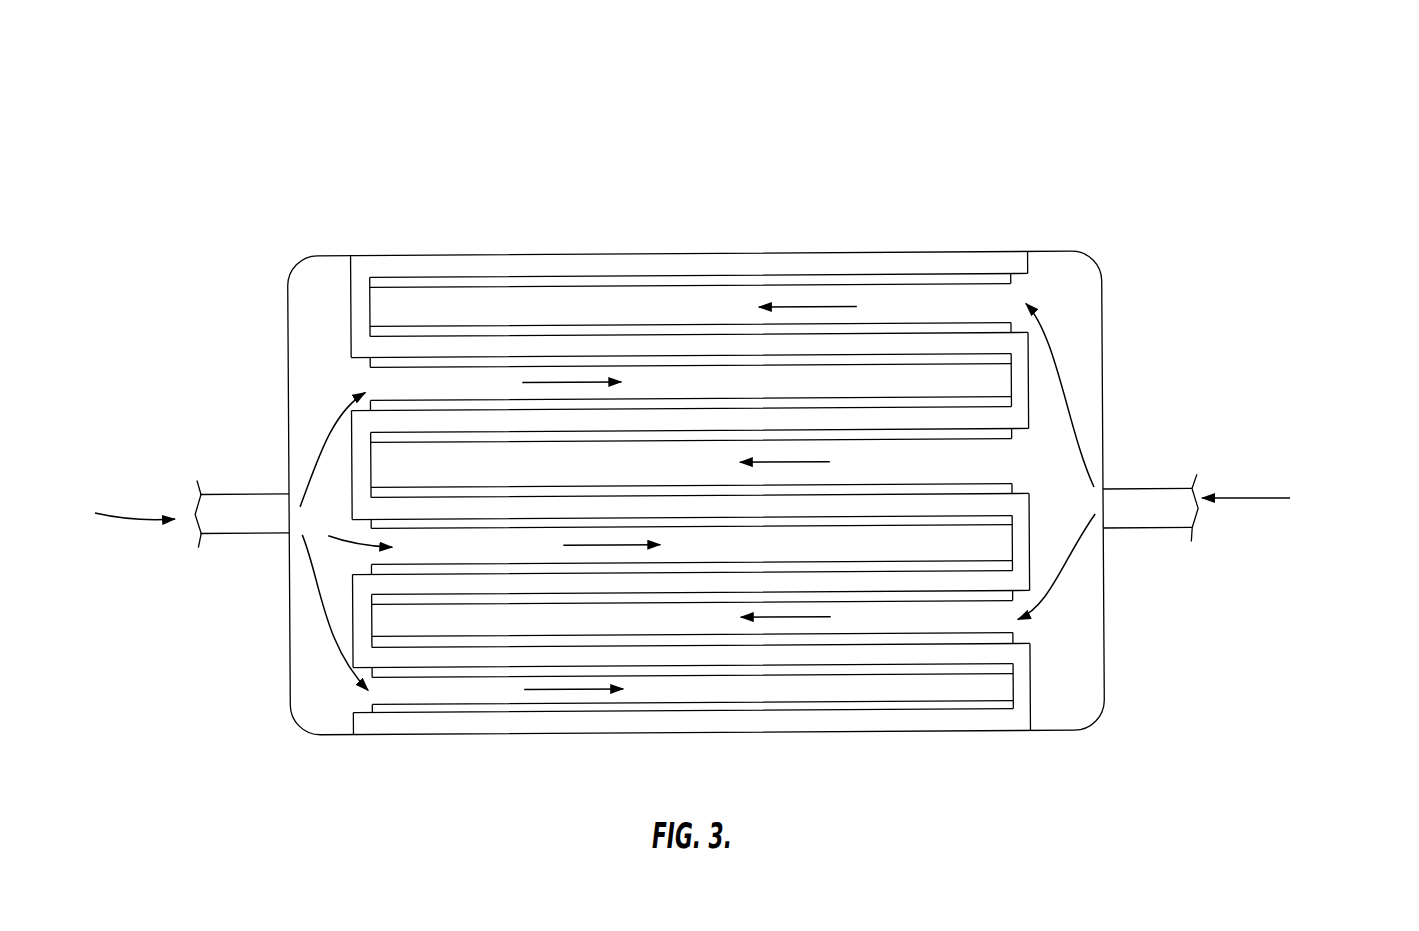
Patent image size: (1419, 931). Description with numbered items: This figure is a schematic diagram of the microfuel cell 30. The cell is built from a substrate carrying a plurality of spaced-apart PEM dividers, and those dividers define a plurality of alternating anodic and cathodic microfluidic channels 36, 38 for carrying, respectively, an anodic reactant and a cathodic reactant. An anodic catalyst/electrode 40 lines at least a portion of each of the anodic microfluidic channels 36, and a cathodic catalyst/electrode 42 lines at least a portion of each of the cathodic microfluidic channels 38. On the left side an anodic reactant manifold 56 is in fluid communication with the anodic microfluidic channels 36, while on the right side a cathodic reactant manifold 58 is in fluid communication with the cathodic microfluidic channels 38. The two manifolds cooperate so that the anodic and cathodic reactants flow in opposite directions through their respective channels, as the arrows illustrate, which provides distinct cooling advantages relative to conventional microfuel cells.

The microfuel cell 30 is at (1072, 138).
The anodic microfluidic channels 36 is at (967, 377).
The cathodic microfluidic channels 38 is at (405, 462).
The anodic catalyst/electrode 40 is at (1008, 706).
The cathodic catalyst/electrode 42 is at (645, 327).
The anodic reactant manifold 56 is at (288, 402).
The cathodic reactant manifold 58 is at (1107, 391).